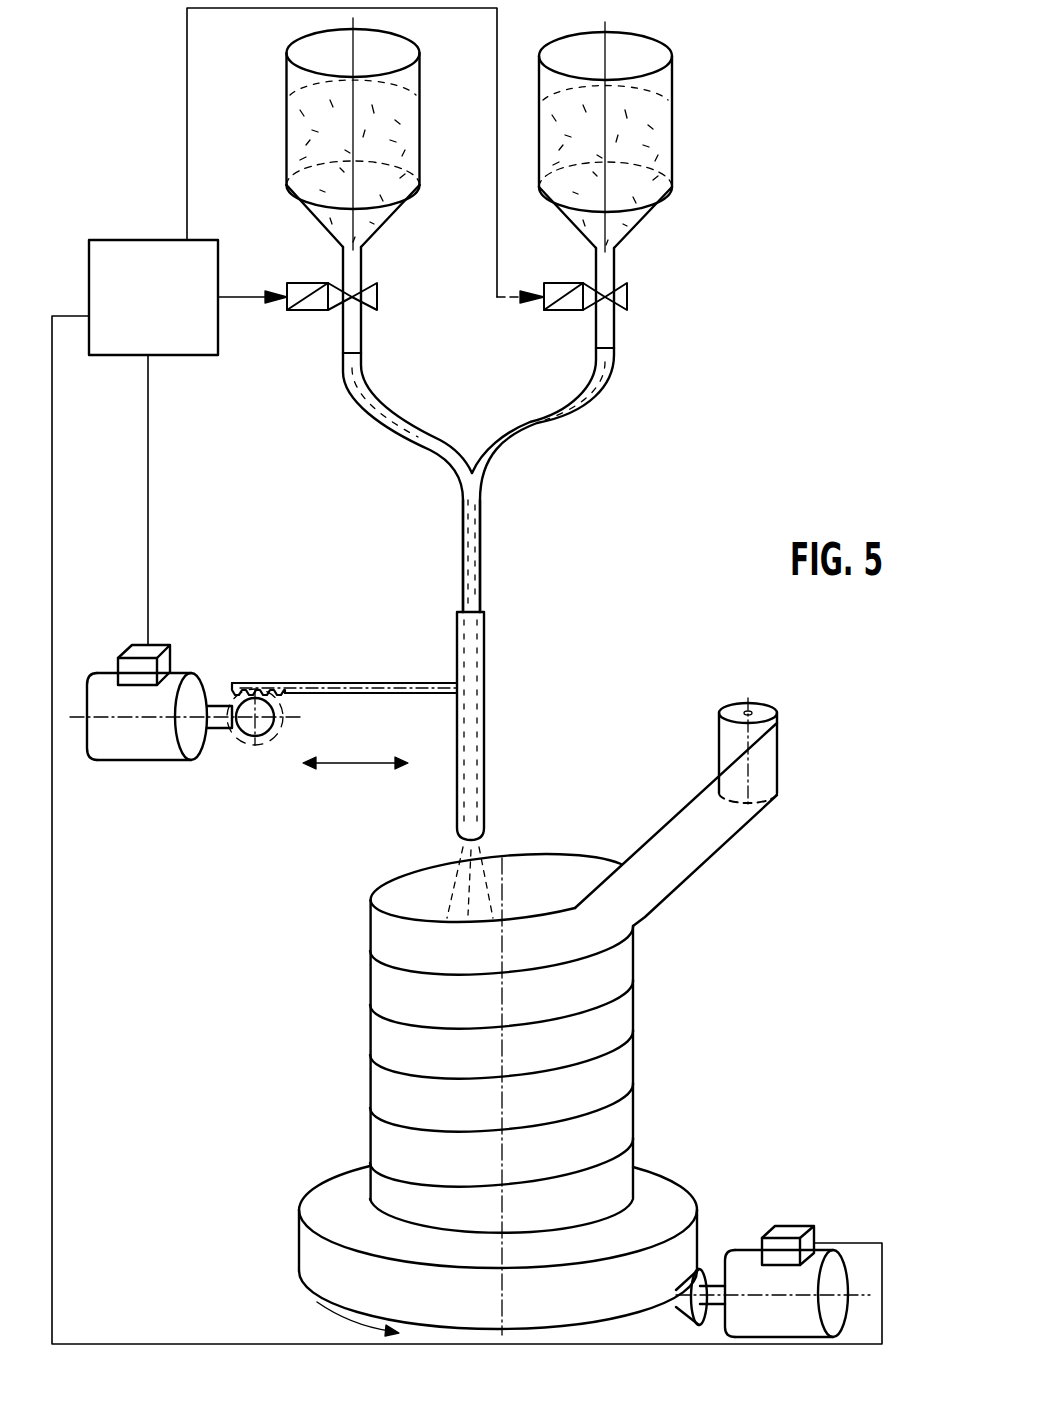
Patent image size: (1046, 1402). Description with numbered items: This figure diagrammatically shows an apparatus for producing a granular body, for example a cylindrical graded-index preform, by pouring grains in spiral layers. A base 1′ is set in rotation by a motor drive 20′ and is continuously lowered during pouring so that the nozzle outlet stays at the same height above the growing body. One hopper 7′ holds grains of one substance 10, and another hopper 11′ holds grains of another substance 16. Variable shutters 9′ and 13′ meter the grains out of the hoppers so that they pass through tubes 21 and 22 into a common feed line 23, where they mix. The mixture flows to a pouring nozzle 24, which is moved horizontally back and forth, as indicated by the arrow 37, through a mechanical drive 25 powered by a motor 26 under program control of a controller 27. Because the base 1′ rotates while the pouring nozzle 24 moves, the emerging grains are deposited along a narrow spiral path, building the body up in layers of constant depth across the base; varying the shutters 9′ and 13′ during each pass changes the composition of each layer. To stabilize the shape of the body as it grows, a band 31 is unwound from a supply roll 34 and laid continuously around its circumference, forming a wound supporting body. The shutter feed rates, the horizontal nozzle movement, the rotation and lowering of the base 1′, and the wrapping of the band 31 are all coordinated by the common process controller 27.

The hopper 7′ is at (312, 82).
The grains of one substance 10 is at (377, 131).
The hopper 11′ is at (655, 83).
The grains of another substance 16 is at (633, 129).
The variable shutter 9′ is at (335, 308).
The variable shutter 13′ is at (620, 312).
The tube 21 is at (398, 422).
The tube 22 is at (552, 415).
The common feed line 23 is at (474, 551).
The pouring nozzle 24 is at (472, 715).
The mechanical drive 25 is at (324, 675).
The motor 26 is at (133, 738).
The controller 27 is at (467, 676).
The arrow 37 is at (370, 764).
The supply roll 34 is at (760, 748).
The band 31 is at (665, 868).
The base 1′ is at (658, 1193).
The motor drive 20′ is at (750, 1268).